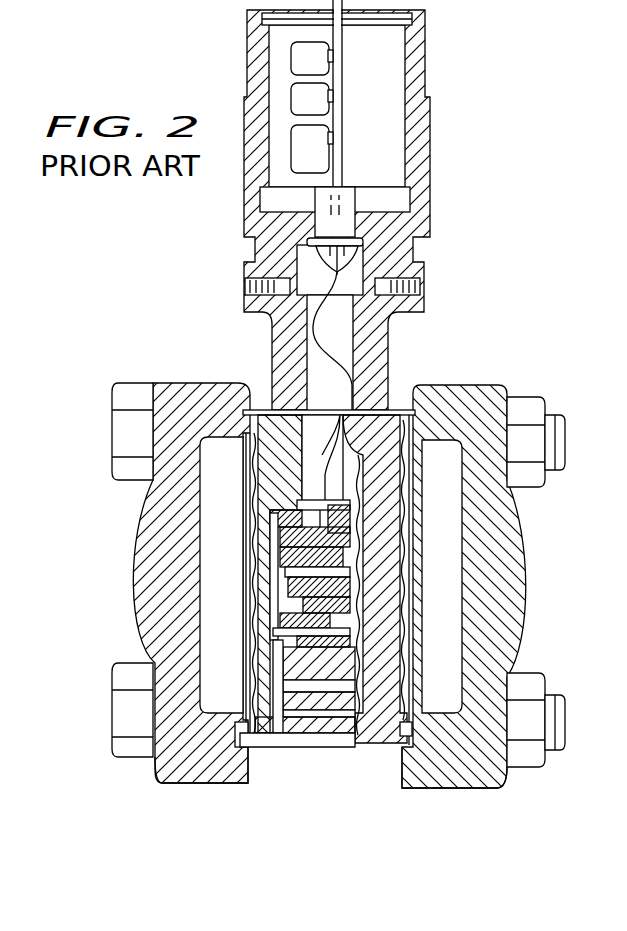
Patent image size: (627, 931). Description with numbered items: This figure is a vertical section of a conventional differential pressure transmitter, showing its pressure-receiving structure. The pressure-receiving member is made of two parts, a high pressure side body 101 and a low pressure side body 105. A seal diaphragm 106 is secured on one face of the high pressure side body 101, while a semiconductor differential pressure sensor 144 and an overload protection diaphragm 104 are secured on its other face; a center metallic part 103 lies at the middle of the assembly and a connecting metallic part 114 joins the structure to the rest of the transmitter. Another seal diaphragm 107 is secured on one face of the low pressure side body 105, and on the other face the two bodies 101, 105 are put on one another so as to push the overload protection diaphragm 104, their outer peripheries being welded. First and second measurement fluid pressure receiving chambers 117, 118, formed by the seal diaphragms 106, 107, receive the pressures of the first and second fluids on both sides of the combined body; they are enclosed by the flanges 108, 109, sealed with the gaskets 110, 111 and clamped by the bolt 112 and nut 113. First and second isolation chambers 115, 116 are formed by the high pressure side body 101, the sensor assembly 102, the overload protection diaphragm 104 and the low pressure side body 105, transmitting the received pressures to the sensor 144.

The high pressure side body 101 is at (318, 745).
The sensor assembly 102 is at (247, 408).
The center metallic part 103 is at (355, 633).
The overload protection diaphragm 104 is at (353, 531).
The low pressure side body 105 is at (380, 748).
The seal diaphragm 106 is at (250, 620).
The seal diaphragm 107 is at (400, 680).
The flange 108 is at (187, 783).
The flange 109 is at (417, 789).
The gasket 110 is at (235, 782).
The gasket 111 is at (443, 770).
The bolt 112 is at (128, 757).
The nut 113 is at (526, 770).
The connecting metallic part 114 is at (427, 242).
The isolation chamber 115 is at (355, 560).
The isolation chamber 116 is at (367, 605).
The measurement fluid pressure receiving chamber 117 is at (218, 513).
The measurement fluid pressure receiving chamber 118 is at (440, 492).
The semiconductor differential pressure sensor 144 is at (250, 566).